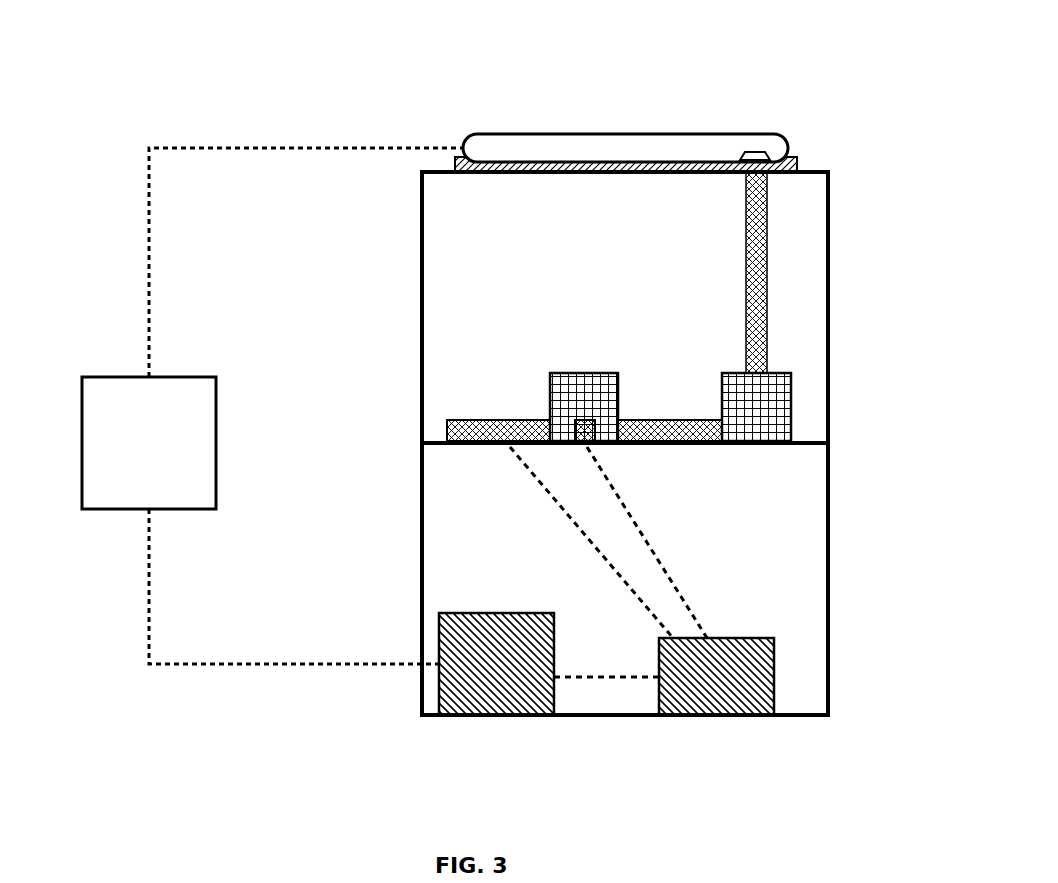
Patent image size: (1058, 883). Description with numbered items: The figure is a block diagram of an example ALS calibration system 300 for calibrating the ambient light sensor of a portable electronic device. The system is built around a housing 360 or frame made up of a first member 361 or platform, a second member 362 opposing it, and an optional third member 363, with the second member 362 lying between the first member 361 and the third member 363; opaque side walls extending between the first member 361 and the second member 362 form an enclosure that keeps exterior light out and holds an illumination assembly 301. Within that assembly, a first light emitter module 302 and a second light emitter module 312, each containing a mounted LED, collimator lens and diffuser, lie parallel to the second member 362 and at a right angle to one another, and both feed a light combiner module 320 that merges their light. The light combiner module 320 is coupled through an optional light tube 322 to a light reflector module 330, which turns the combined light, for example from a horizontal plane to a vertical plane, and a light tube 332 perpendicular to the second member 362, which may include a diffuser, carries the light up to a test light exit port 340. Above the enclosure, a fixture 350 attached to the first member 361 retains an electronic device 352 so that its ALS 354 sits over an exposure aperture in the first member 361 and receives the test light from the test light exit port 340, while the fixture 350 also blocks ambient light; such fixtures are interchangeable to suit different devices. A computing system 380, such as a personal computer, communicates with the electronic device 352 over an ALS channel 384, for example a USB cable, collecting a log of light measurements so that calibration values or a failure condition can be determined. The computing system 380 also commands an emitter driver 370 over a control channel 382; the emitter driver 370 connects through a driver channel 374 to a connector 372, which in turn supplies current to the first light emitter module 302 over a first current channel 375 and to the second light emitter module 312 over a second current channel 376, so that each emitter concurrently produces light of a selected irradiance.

The ALS calibration system 300 is at (360, 35).
The illumination assembly 301 is at (566, 310).
The first light emitter module 302 is at (447, 421).
The second light emitter module 312 is at (575, 421).
The light combiner module 320 is at (568, 372).
The light tube 322 is at (668, 420).
The light reflector module 330 is at (791, 410).
The light tube 332 is at (767, 306).
The test light exit port 340 is at (780, 184).
The fixture 350 is at (797, 164).
The electronic device 352 is at (548, 134).
The ALS 354 is at (757, 152).
The housing 360 is at (420, 562).
The first member 361 is at (443, 175).
The second member 362 is at (800, 447).
The third member 363 is at (572, 717).
The emitter driver 370 is at (497, 613).
The connector 372 is at (730, 638).
The driver channel 374 is at (622, 680).
The first current channel 375 is at (558, 503).
The second current channel 376 is at (658, 561).
The computing system 380 is at (149, 443).
The control channel 382 is at (149, 578).
The ALS channel 384 is at (149, 258).